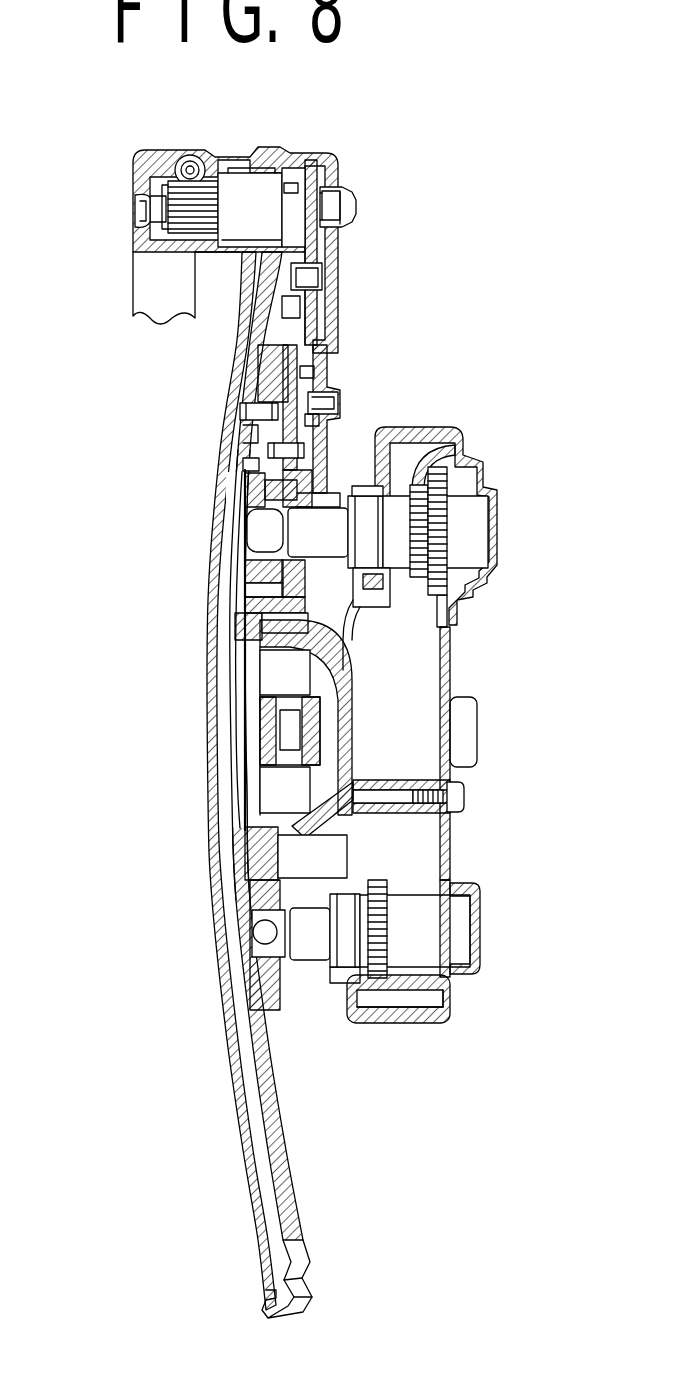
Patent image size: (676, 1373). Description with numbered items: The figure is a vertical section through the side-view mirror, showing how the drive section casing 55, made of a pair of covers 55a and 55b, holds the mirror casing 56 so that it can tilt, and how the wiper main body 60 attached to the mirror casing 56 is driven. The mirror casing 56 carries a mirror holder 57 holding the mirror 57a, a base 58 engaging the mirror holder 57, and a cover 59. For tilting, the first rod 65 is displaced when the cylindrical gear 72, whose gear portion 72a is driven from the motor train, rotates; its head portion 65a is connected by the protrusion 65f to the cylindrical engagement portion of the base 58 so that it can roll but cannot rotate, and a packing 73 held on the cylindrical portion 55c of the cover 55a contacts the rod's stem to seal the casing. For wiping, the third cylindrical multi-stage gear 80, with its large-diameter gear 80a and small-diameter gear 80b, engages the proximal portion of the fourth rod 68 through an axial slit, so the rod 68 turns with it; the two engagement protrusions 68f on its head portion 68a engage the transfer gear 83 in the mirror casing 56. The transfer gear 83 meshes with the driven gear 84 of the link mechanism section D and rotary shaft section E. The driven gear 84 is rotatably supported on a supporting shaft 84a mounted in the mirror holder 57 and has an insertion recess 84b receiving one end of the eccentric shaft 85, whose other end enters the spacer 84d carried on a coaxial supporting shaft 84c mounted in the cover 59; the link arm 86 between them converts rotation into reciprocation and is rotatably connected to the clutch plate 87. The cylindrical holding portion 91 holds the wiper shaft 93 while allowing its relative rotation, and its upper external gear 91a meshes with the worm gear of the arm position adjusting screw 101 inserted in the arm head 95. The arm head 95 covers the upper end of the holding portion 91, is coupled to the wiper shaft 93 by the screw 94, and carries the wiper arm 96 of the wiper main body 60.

The arm head 95 is at (143, 150).
The arm position adjusting screw 101 is at (192, 160).
The cylindrical holding portion 91 is at (250, 180).
The external gear 91a is at (135, 176).
The rotary shaft section E is at (293, 184).
The wiper main body 60 is at (124, 224).
The screw 94 is at (134, 222).
The wiper arm 96 is at (140, 301).
The wiper shaft 93 is at (352, 196).
The clutch plate 87 is at (324, 258).
The link mechanism section D is at (290, 305).
The cover 59 is at (334, 344).
The link arm 86 is at (319, 382).
The spacer 84d is at (314, 372).
The supporting shaft 84c is at (322, 410).
The driven gear 84 is at (255, 356).
The supporting shaft 84a is at (240, 411).
The eccentric shaft 85 is at (258, 452).
The insertion recess 84b is at (243, 464).
The transfer gear 83 is at (245, 484).
The head portion 68a is at (263, 533).
The engagement protrusions 68f is at (255, 514).
The fourth rod 68 is at (334, 500).
The third cylindrical multi-stage gear 80 is at (481, 520).
The large-diameter gear 80a is at (466, 456).
The small-diameter gear 80b is at (433, 458).
The packing 73 is at (364, 586).
The base 58 is at (250, 892).
The protrusion 65f is at (252, 973).
The head portion 65a is at (254, 935).
The first rod 65 is at (301, 950).
The cylindrical gear 72 is at (453, 940).
The gear portion 72a is at (393, 882).
The cylindrical portion 55c is at (395, 848).
The cover 55a is at (392, 1024).
The cover 55b is at (441, 1024).
The drive section casing 55 is at (360, 1080).
The mirror 57a is at (259, 1250).
The mirror casing 56 is at (298, 1179).
The mirror holder 57 is at (301, 1255).